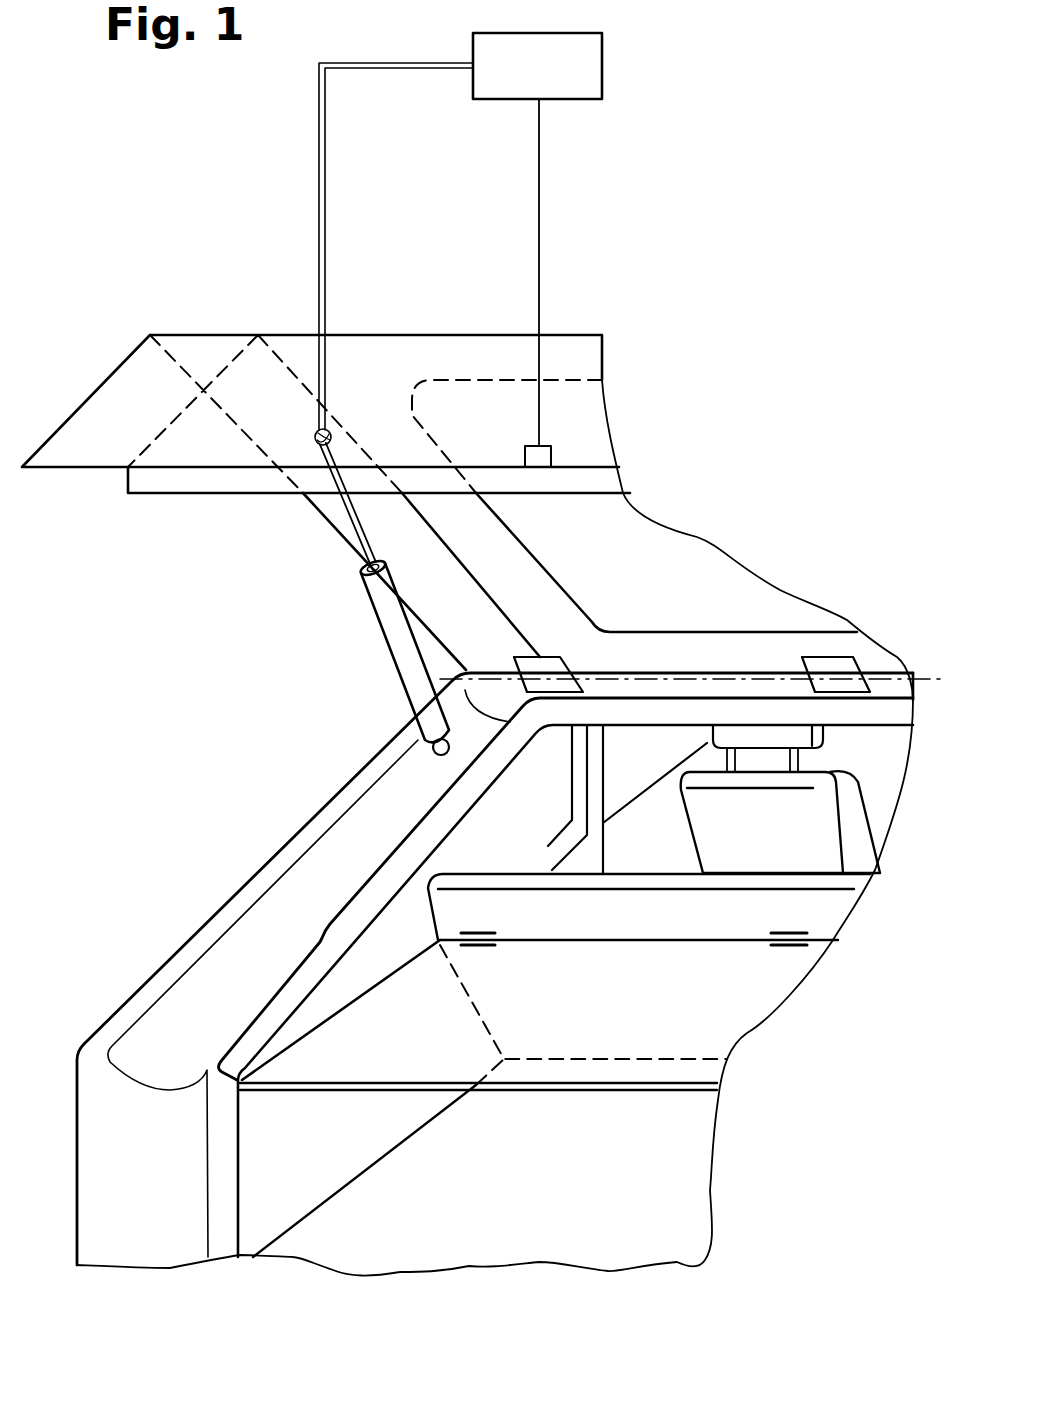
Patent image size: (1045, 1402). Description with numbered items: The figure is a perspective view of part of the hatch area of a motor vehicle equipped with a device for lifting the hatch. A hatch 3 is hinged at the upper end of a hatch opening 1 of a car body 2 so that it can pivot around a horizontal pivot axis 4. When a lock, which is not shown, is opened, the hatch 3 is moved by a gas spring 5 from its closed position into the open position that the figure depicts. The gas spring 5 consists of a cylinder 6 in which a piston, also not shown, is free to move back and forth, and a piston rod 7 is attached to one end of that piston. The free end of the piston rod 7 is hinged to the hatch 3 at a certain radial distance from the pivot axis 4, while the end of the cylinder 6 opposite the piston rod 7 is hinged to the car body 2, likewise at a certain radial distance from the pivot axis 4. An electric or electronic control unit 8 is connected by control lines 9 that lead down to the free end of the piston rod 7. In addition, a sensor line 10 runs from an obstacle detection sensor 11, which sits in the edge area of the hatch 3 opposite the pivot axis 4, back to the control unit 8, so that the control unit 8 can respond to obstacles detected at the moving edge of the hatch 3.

The hatch opening 1 is at (752, 999).
The car body 2 is at (230, 912).
The hatch 3 is at (580, 358).
The pivot axis 4 is at (928, 674).
The gas spring 5 is at (404, 690).
The cylinder 6 is at (400, 643).
The piston rod 7 is at (350, 520).
The control unit 8 is at (583, 70).
The control lines 9 is at (318, 203).
The sensor line 10 is at (539, 212).
The obstacle detection sensor 11 is at (538, 455).